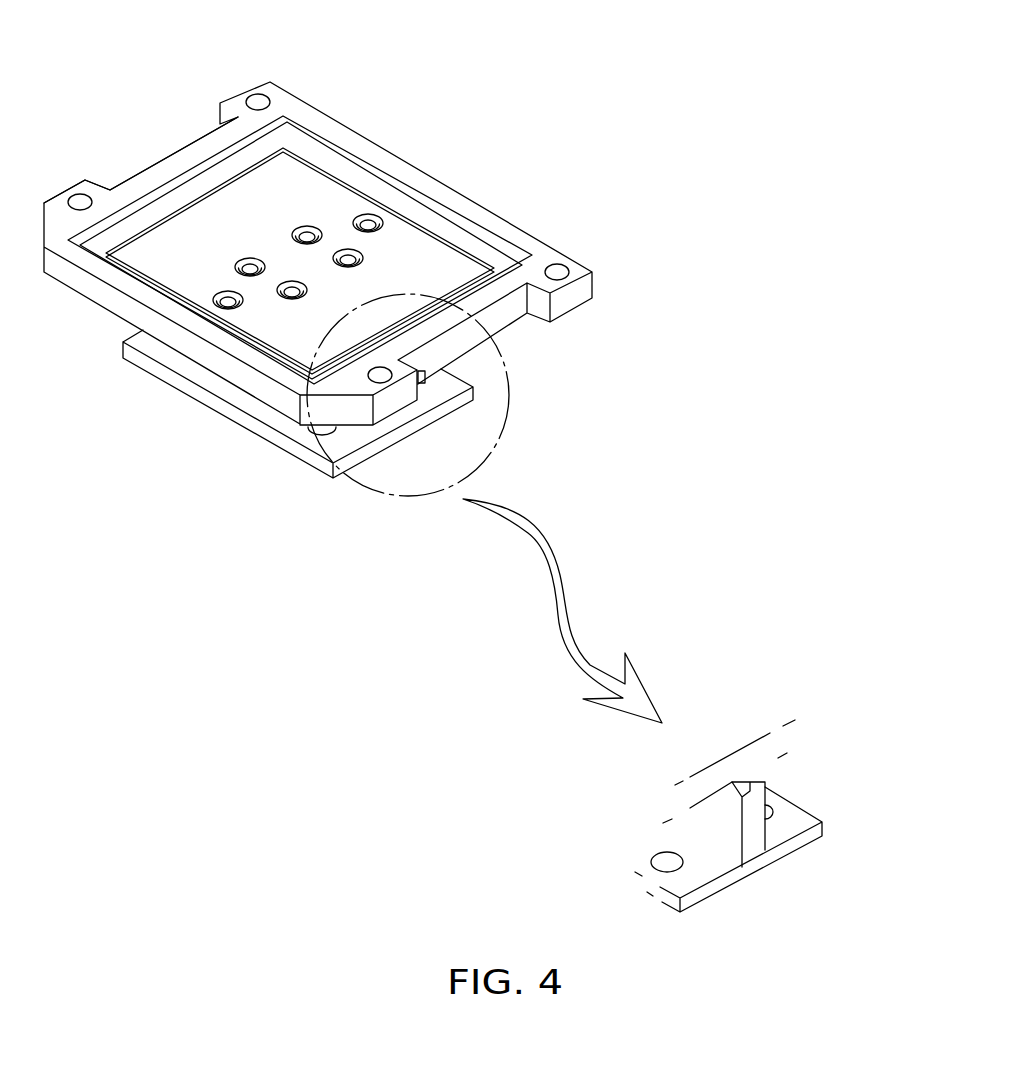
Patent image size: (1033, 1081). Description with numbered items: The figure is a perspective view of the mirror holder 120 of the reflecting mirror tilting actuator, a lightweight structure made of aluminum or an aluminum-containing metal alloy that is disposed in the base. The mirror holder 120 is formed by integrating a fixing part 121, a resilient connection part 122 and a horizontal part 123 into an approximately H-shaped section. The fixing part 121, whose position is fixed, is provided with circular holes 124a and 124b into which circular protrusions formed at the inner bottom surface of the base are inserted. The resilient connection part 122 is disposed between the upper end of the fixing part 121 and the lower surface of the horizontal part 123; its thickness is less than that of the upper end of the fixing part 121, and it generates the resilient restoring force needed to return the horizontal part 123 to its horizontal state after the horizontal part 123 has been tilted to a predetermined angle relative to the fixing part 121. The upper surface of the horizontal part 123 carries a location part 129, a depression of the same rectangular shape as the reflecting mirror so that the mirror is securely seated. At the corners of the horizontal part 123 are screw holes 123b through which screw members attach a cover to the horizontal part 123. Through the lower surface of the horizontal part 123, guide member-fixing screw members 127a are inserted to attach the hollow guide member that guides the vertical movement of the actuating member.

The mirror holder 120 is at (527, 187).
The fixing part 121 is at (213, 387).
The resilient connection part 122 is at (758, 779).
The horizontal part 123 is at (540, 256).
The screw holes 123b is at (258, 98).
The circular hole 124a is at (426, 375).
The circular hole 124b is at (307, 432).
The guide member-fixing screw members 127a is at (373, 217).
The location part 129 is at (168, 167).